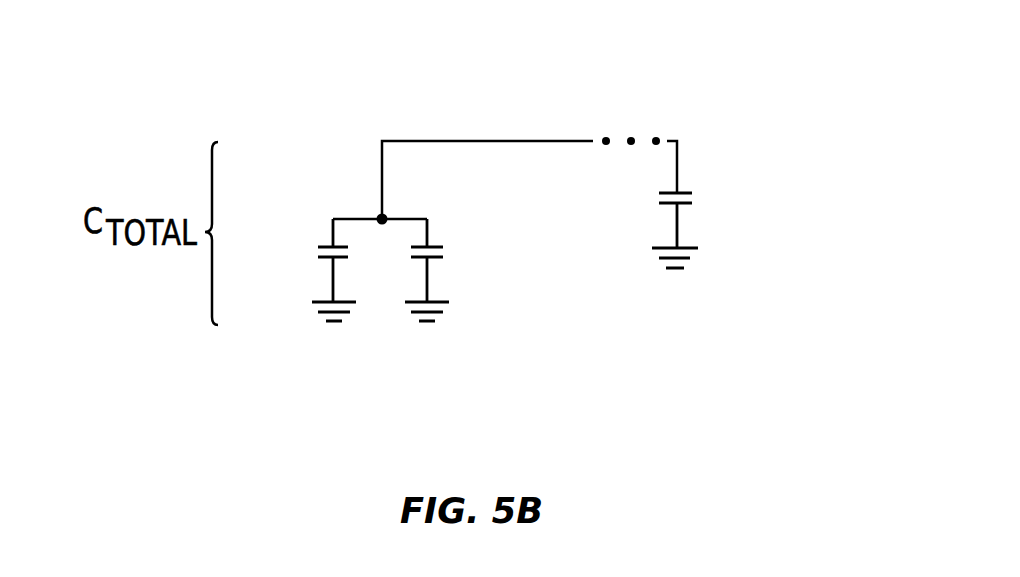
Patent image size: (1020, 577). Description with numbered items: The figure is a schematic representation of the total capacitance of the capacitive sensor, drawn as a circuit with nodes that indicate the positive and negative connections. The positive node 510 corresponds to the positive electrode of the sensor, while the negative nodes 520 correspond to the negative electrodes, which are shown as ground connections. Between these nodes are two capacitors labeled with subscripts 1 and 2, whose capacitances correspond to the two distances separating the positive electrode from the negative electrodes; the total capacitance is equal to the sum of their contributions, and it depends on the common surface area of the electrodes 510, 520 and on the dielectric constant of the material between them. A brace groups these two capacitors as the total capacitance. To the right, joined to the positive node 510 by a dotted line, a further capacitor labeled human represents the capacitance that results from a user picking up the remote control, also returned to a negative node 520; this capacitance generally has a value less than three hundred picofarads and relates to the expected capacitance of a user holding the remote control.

The positive electrode 510 is at (352, 217).
The negative electrode 520 is at (540, 260).
The capacitor C1 1 is at (316, 270).
The capacitor C2 2 is at (445, 270).